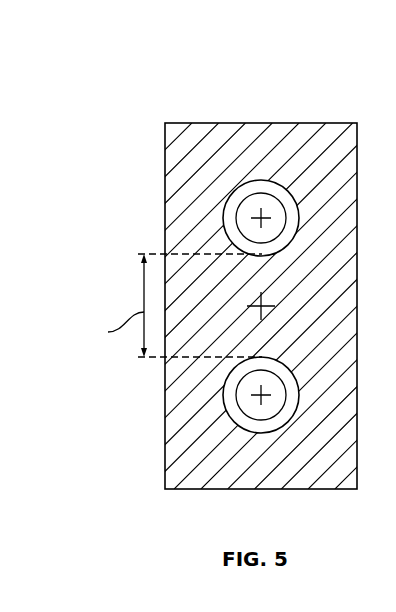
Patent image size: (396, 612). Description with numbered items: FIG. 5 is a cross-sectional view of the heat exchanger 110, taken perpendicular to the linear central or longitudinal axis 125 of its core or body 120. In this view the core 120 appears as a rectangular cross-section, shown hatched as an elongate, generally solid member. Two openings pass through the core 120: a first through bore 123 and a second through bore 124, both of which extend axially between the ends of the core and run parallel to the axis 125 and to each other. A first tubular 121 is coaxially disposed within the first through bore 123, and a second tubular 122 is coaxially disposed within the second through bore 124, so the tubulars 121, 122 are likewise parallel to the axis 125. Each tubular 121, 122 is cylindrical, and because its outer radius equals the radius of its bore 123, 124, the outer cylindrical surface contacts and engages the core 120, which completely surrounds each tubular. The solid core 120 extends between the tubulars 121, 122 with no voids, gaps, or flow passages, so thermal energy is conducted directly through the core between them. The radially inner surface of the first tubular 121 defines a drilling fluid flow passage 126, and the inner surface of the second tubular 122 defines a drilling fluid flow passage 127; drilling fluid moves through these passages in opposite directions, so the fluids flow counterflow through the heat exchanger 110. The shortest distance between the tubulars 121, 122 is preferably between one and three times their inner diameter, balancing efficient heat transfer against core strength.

The heat exchanger 110 is at (178, 78).
The core 120 is at (292, 122).
The first tubular 121 is at (250, 330).
The second tubular 122 is at (250, 317).
The first through bore 123 is at (260, 433).
The second through bore 124 is at (260, 180).
The central or longitudinal axis 125 is at (277, 318).
The drilling fluid flow passage 126 is at (274, 383).
The drilling fluid flow passage 127 is at (276, 204).